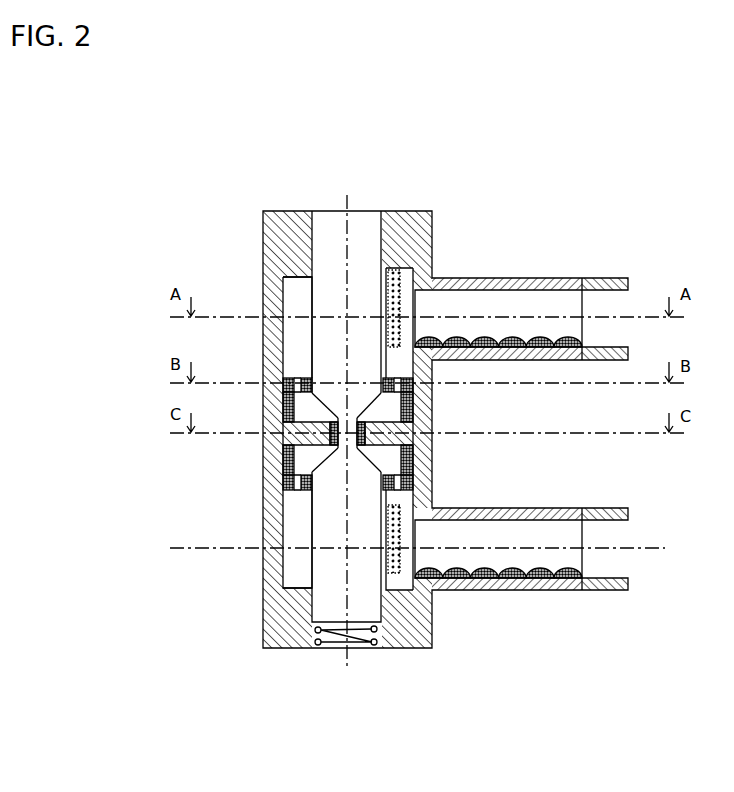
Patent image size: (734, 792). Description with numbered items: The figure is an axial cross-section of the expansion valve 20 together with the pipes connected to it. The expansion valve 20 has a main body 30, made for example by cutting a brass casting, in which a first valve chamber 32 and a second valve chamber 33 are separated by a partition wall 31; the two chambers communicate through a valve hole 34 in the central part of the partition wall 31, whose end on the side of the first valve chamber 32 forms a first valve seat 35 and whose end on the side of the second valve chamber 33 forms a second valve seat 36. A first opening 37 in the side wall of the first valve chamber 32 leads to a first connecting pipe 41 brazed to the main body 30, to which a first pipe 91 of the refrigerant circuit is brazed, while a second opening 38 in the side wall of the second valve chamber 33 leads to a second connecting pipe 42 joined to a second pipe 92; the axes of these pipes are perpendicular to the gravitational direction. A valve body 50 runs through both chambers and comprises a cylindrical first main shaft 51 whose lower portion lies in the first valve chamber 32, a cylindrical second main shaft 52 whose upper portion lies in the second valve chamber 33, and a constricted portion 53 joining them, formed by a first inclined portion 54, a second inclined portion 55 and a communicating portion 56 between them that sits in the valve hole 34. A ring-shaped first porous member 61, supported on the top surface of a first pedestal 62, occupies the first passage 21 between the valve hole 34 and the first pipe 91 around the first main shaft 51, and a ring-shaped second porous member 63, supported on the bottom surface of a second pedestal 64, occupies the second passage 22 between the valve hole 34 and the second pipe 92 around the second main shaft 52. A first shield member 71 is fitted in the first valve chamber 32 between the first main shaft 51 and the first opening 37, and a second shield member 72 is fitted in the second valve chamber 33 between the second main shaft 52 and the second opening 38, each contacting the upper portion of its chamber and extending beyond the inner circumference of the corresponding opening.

The expansion valve 20 is at (252, 195).
The main body 30 is at (417, 226).
The partition wall 31 is at (290, 441).
The first valve chamber 32 is at (295, 305).
The second valve chamber 33 is at (293, 560).
The valve hole 34 is at (430, 426).
The first valve seat 35 is at (362, 417).
The second valve seat 36 is at (362, 448).
The first opening 37 is at (396, 282).
The second opening 38 is at (392, 568).
The first connecting pipe 41 is at (498, 278).
The second connecting pipe 42 is at (497, 590).
The first passage 21 is at (520, 332).
The second passage 22 is at (516, 538).
The valve body 50 is at (373, 226).
The first main shaft 51 is at (328, 226).
The second main shaft 52 is at (263, 623).
The constricted portion 53 is at (336, 394).
The first inclined portion 54 is at (290, 399).
The second inclined portion 55 is at (290, 466).
The communicating portion 56 is at (290, 421).
The first porous member 61 is at (290, 384).
The first pedestal 62 is at (405, 393).
The second porous member 63 is at (263, 494).
The second pedestal 64 is at (406, 470).
The first shield member 71 is at (421, 257).
The second shield member 72 is at (424, 597).
The first pipe 91 is at (610, 278).
The second pipe 92 is at (606, 590).